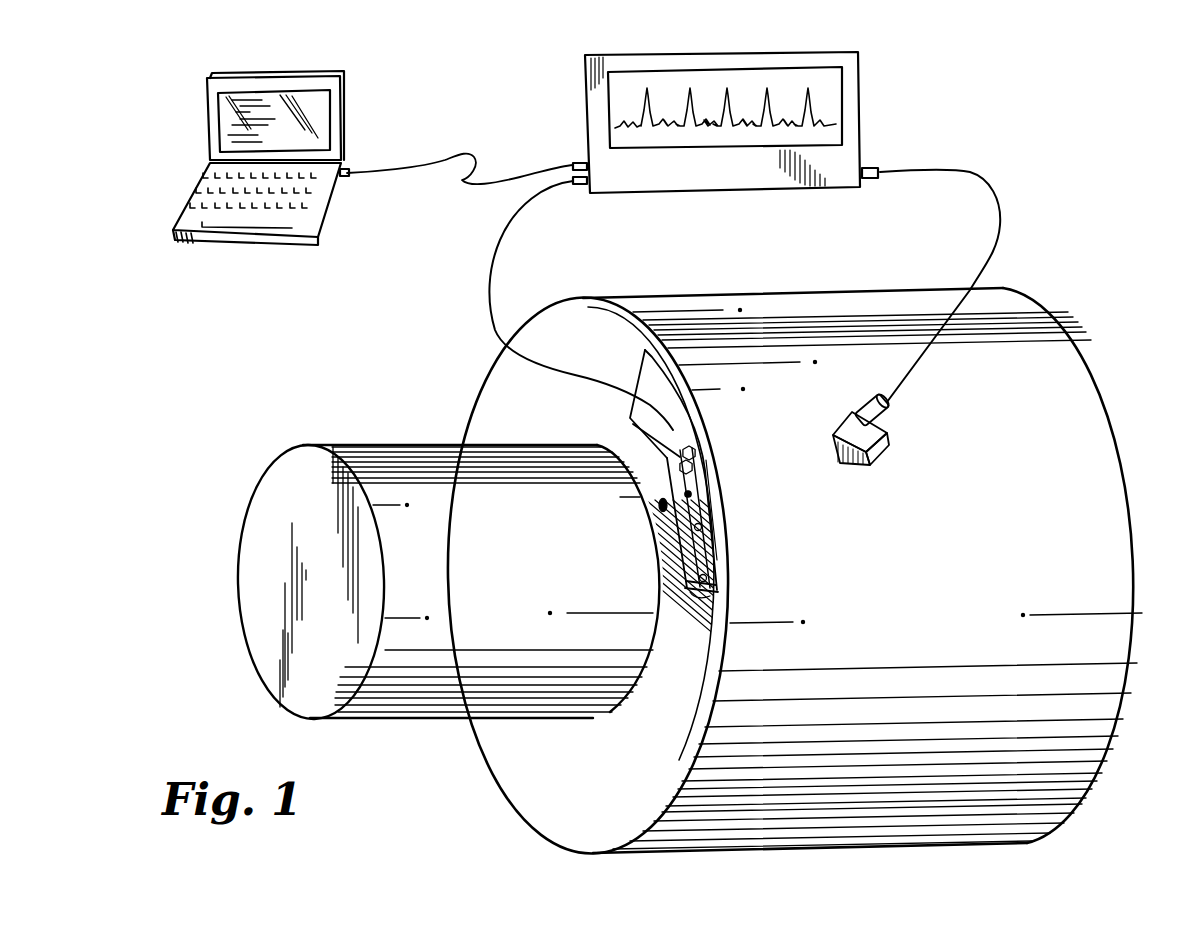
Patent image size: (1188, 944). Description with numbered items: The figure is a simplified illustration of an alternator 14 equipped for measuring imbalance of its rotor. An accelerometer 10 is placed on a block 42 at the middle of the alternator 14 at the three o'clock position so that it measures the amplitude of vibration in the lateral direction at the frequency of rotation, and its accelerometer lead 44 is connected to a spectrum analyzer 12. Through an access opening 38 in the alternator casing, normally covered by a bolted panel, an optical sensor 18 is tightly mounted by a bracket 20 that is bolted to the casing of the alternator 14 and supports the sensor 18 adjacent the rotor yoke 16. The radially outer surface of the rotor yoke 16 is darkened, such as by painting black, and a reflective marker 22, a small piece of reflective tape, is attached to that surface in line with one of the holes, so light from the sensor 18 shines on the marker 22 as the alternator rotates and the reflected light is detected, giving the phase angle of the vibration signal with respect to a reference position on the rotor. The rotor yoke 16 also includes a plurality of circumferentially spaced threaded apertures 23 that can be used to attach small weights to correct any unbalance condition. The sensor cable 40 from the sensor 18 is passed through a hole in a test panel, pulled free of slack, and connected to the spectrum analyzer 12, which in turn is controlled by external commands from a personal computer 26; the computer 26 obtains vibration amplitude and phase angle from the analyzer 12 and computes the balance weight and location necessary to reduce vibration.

The accelerometer 10 is at (889, 400).
The spectrum analyzer 12 is at (863, 102).
The alternator 14 is at (868, 287).
The rotor yoke 16 is at (700, 540).
The optical sensor 18 is at (696, 462).
The bracket 20 is at (660, 480).
The reflective marker 22 is at (692, 493).
The threaded apertures 23 is at (706, 592).
The personal computer 26 is at (258, 240).
The access opening 38 is at (718, 567).
The sensor cable 40 is at (484, 286).
The block 42 is at (882, 445).
The accelerometer lead 44 is at (988, 135).